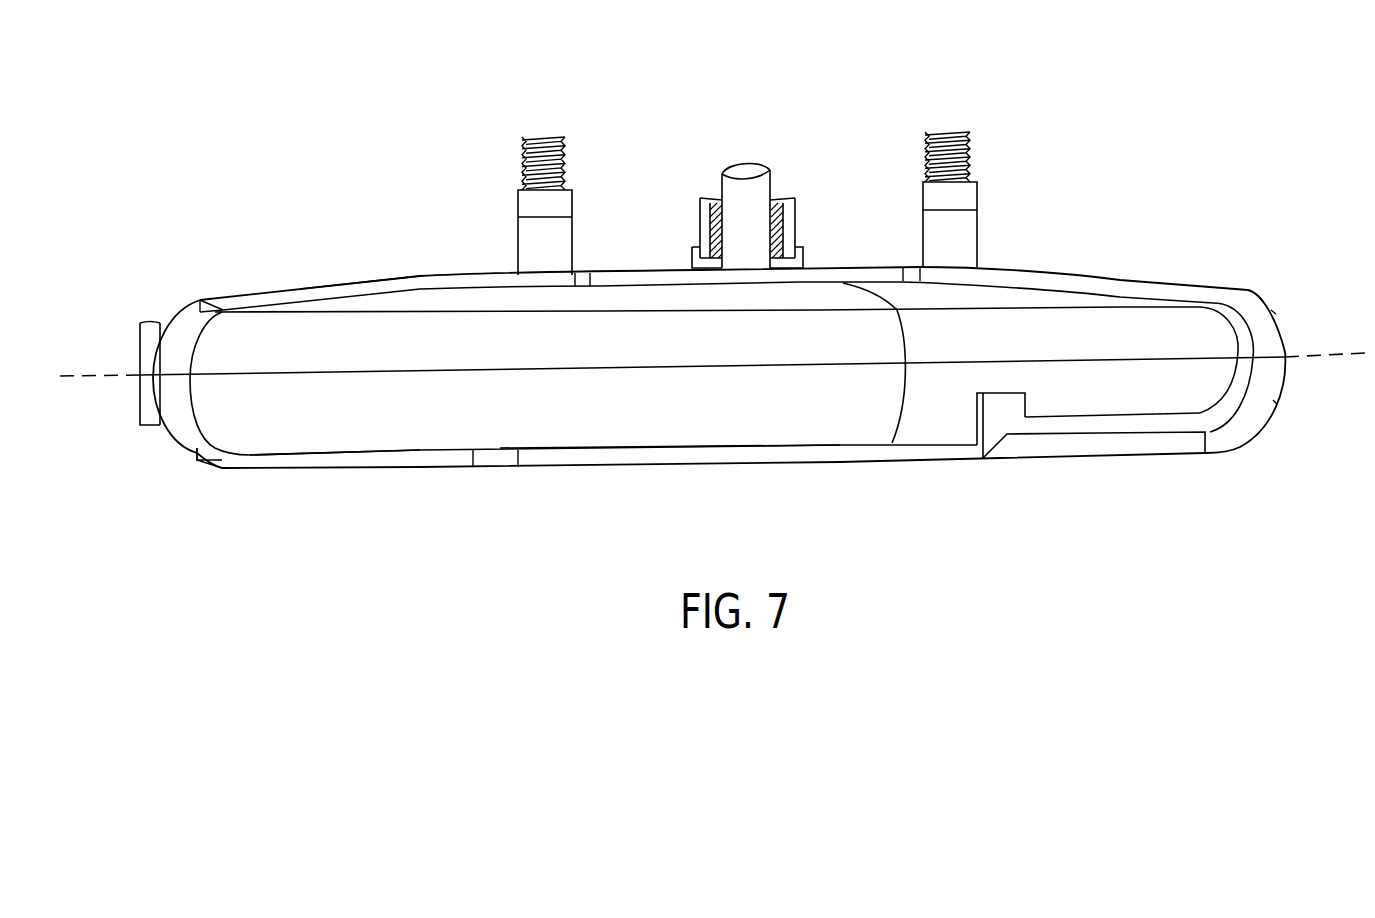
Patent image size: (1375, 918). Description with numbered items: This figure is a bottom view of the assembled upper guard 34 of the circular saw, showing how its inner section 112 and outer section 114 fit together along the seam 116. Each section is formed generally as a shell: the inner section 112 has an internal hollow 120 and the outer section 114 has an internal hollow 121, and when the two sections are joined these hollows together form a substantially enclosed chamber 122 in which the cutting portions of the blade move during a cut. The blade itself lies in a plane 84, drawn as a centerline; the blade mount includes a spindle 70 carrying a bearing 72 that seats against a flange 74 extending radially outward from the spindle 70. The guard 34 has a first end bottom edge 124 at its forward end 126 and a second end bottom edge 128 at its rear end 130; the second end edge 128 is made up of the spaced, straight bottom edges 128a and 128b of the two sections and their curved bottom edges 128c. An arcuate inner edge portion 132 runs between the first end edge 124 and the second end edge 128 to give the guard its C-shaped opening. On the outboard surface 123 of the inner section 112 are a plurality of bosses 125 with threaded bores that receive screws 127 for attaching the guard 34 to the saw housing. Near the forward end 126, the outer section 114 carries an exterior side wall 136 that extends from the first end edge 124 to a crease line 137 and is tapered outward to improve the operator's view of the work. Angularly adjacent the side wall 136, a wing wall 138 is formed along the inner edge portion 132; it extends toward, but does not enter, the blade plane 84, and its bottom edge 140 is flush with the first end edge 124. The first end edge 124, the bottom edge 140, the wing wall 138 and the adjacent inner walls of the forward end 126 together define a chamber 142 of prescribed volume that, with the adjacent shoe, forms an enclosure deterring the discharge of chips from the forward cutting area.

The upper guard 34 is at (290, 110).
The spindle 70 is at (738, 195).
The bearing 72 is at (697, 265).
The flange 74 is at (787, 232).
The plane 84 is at (1325, 356).
The inner section 112 is at (301, 278).
The outer section 114 is at (402, 475).
The seam 116 is at (370, 378).
The internal hollow 120 is at (990, 295).
The internal hollow 121 is at (855, 414).
The chamber 122 is at (625, 435).
The outboard surface 123 is at (425, 272).
The first end bottom edge 124 is at (1210, 295).
The bosses 125 is at (525, 237).
The forward end 126 is at (1273, 333).
The screws 127 is at (537, 135).
The second end bottom edge 128 is at (310, 470).
The straight bottom edge 128a is at (227, 300).
The straight bottom edge 128b is at (225, 462).
The curved bottom edges 128c is at (140, 323).
The rear end 130 is at (197, 433).
The arcuate inner edge portion 132 is at (640, 273).
The side wall 136 is at (1155, 450).
The crease line 137 is at (1025, 460).
The wing wall 138 is at (1032, 403).
The bottom edge 140 is at (1017, 396).
The chamber 142 is at (1247, 390).